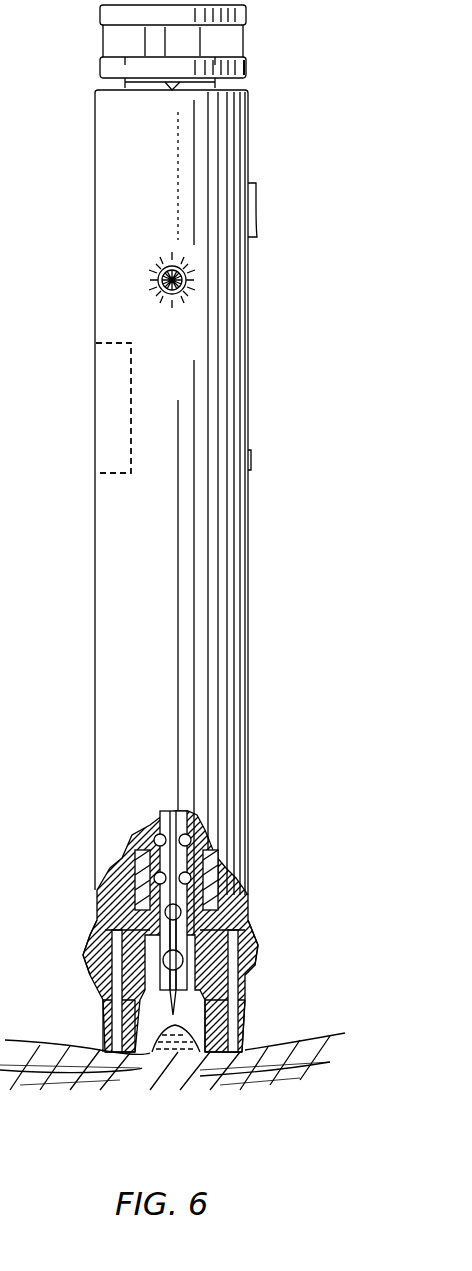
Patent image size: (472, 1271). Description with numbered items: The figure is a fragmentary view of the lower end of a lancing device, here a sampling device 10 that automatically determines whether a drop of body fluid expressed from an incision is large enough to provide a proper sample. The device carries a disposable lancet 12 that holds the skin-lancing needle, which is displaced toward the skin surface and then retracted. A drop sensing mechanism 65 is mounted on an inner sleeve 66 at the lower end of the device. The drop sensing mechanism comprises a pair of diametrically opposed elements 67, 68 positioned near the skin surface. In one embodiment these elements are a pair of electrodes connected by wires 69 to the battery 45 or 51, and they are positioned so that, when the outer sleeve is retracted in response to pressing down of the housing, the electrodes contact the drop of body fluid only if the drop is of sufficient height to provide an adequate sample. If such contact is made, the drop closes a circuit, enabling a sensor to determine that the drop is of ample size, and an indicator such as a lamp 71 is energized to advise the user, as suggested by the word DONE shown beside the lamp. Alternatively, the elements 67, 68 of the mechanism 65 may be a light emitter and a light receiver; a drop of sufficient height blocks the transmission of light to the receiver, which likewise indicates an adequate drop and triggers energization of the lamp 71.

The sampling device 10 is at (256, 465).
The disposable lancet 12 is at (237, 935).
The battery 45 is at (108, 405).
The battery 51 is at (113, 408).
The drop sensing mechanism 65 is at (245, 1005).
The inner sleeve 66 is at (135, 1052).
The element 67 is at (205, 1048).
The element 68 is at (125, 1010).
The wires 69 is at (255, 960).
The lamp 71 is at (196, 270).